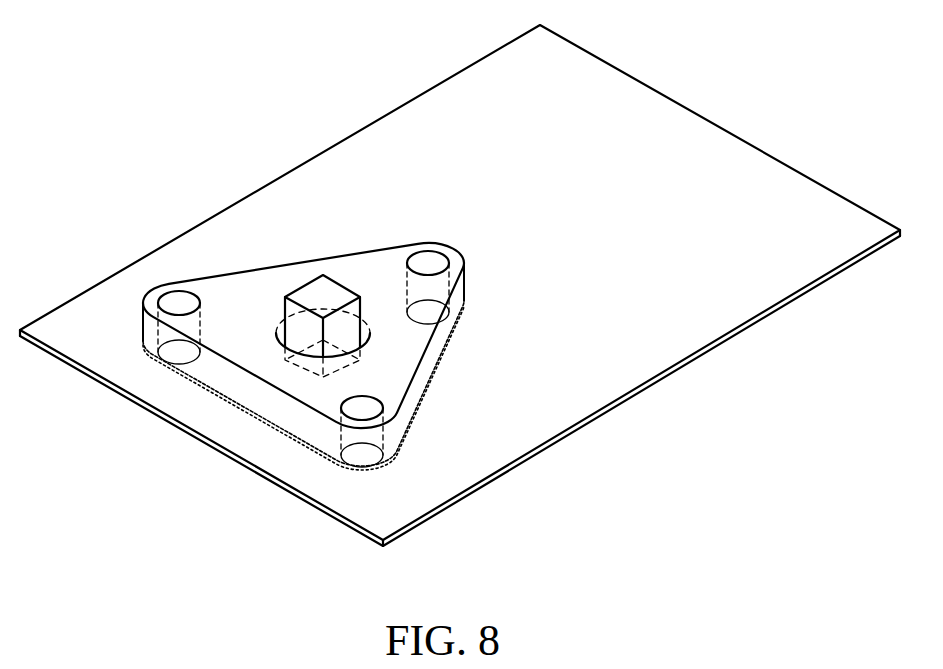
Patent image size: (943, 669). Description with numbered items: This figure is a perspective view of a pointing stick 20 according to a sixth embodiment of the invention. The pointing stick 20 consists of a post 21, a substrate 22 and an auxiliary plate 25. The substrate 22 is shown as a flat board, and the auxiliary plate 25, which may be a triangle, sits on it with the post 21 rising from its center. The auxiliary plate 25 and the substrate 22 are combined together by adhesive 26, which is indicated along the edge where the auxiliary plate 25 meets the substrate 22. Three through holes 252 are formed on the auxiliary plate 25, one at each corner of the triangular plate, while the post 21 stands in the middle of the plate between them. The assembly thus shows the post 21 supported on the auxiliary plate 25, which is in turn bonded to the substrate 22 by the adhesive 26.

The pointing stick 20 is at (68, 159).
The post 21 is at (326, 287).
The substrate 22 is at (688, 137).
The auxiliary plate 25 is at (427, 357).
The through holes 252 is at (181, 300).
The adhesive 26 is at (430, 392).